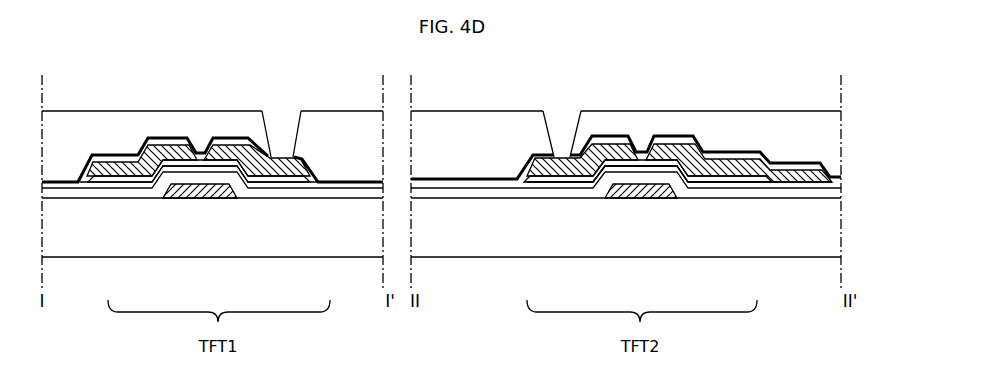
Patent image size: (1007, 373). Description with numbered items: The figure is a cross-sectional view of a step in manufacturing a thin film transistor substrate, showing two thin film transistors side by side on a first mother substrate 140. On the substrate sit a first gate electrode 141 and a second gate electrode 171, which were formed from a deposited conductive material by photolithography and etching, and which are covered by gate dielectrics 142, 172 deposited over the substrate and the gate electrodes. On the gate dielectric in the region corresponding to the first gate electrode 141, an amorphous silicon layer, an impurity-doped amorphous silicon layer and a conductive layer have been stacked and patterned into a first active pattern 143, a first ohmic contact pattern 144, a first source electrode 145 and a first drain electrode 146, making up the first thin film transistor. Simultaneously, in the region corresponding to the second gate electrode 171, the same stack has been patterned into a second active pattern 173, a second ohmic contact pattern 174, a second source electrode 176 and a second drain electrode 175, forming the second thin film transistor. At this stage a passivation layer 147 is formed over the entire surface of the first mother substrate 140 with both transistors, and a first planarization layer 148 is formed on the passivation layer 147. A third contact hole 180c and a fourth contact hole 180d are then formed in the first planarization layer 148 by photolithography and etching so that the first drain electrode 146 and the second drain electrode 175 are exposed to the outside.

The first mother substrate 140 is at (76, 250).
The first gate electrode 141 is at (197, 200).
The gate dielectric 142 is at (243, 190).
The first active pattern 143 is at (272, 180).
The first ohmic contact pattern 144 is at (143, 165).
The first source electrode 145 is at (108, 165).
The first drain electrode 146 is at (297, 165).
The passivation layer 147 is at (358, 183).
The first planarization layer 148 is at (99, 114).
The second gate electrode 171 is at (650, 200).
The gate dielectric 172 is at (688, 190).
The second active pattern 173 is at (617, 163).
The second ohmic contact pattern 174 is at (562, 176).
The second drain electrode 175 is at (537, 172).
The second source electrode 176 is at (730, 172).
The third contact hole 180c is at (279, 118).
The fourth contact hole 180d is at (561, 118).